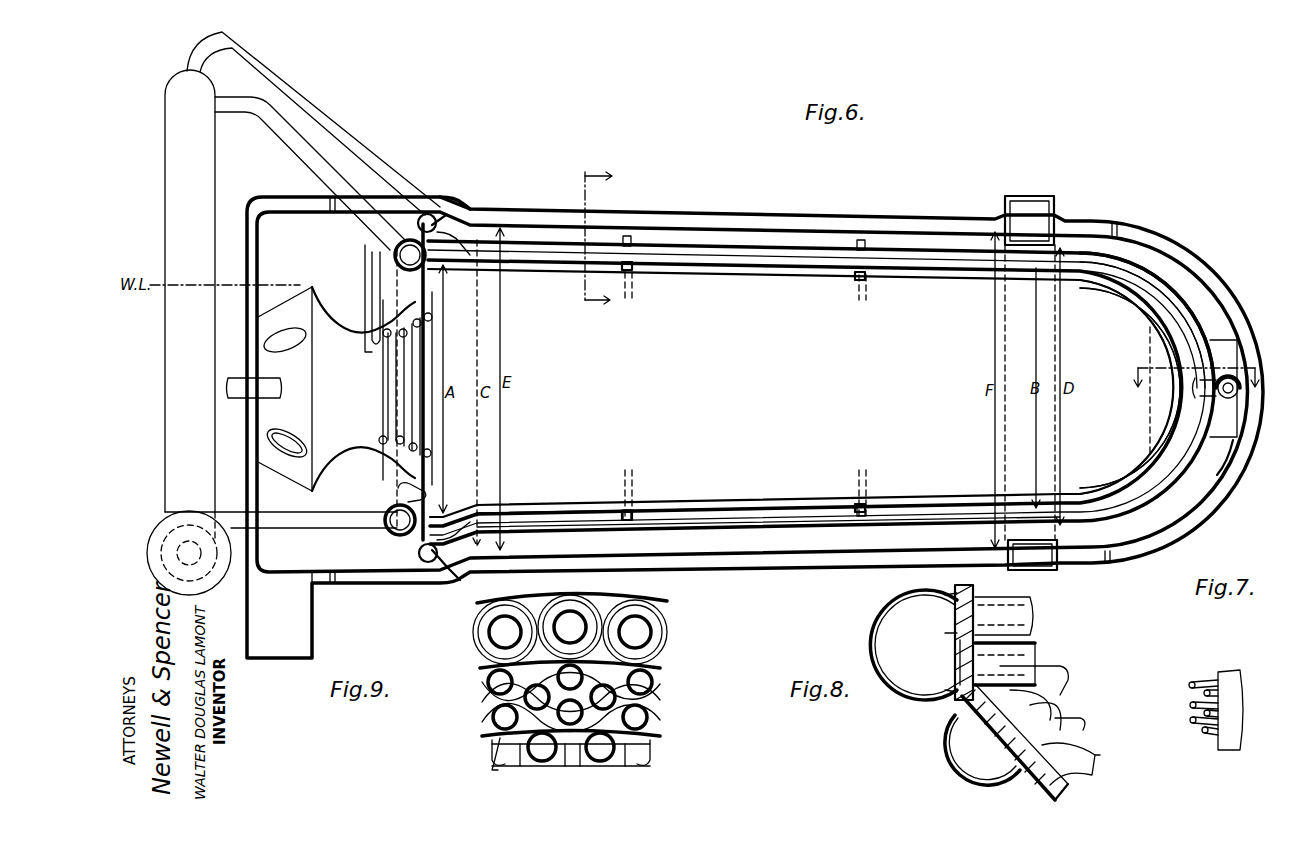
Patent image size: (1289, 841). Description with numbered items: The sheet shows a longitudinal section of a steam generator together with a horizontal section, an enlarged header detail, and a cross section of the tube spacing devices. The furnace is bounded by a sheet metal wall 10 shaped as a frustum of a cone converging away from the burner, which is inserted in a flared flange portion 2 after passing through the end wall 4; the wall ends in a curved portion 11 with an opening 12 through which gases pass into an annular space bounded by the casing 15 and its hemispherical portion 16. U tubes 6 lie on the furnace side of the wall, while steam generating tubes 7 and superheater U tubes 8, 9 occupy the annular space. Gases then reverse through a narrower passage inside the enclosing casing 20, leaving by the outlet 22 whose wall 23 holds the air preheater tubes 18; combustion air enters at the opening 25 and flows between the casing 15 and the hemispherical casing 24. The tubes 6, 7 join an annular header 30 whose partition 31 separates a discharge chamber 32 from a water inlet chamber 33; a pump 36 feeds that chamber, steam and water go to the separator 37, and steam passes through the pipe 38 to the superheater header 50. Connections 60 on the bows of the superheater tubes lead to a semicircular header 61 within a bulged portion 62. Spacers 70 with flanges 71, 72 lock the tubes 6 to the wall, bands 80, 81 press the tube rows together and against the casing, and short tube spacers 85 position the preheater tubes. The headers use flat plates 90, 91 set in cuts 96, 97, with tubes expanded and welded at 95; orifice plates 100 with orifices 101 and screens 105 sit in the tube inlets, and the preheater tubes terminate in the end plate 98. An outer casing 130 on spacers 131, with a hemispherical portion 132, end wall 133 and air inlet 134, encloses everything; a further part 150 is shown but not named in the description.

In FIG. 6, the flared flange portion 2 is at (345, 330).
In FIG. 6, the end wall 4 is at (269, 393).
In FIG. 6, the U tubes 6 is at (700, 250).
In FIG. 9, the U tubes 6 is at (540, 762).
In FIG. 8, the U tubes 6 is at (1020, 598).
In FIG. 6, the steam generating tubes 7 is at (720, 250).
In FIG. 9, the steam generating tubes 7 is at (650, 715).
In FIG. 8, the steam generating tubes 7 is at (1035, 645).
In FIG. 6, the U tubes 8 is at (450, 505).
In FIG. 9, the U tubes 8 is at (537, 685).
In FIG. 8, the U tubes 8 is at (1055, 670).
In FIG. 7, the U tubes 8 is at (1190, 718).
In FIG. 6, the U tubes 9 is at (555, 248).
In FIG. 9, the U tubes 9 is at (660, 688).
In FIG. 8, the U tubes 9 is at (1083, 722).
In FIG. 7, the U tubes 9 is at (1200, 680).
In FIG. 6, the sheet metal wall 10 is at (528, 240).
In FIG. 9, the sheet metal wall 10 is at (650, 737).
In FIG. 6, the curved portion 11 is at (1110, 300).
In FIG. 6, the opening 12 is at (1185, 340).
In FIG. 6, the casing 15 is at (670, 250).
In FIG. 9, the casing 15 is at (658, 668).
In FIG. 6, the hemispherical portion 16 is at (1150, 262).
In FIG. 6, the air preheater tubes 18 is at (740, 235).
In FIG. 9, the air preheater tubes 18 is at (575, 620).
In FIG. 8, the air preheater tubes 18 is at (1095, 755).
In FIG. 6, the enclosing casing 20 is at (895, 240).
In FIG. 9, the enclosing casing 20 is at (600, 600).
In FIG. 6, the outlet 22 is at (1025, 205).
In FIG. 6, the wall 23 is at (1065, 232).
In FIG. 6, the casing 24 is at (1190, 293).
In FIG. 6, the opening 25 is at (1229, 457).
In FIG. 6, the annular header 30 is at (383, 438).
In FIG. 8, the annular header 30 is at (862, 625).
In FIG. 6, the partition 31 is at (388, 388).
In FIG. 6, the chamber 32 is at (372, 280).
In FIG. 6, the chamber 33 is at (398, 490).
In FIG. 6, the pump 36 is at (202, 528).
In FIG. 6, the steam and water separator 37 is at (165, 205).
In FIG. 6, the pipe 38 is at (298, 98).
In FIG. 6, the superheater header 50 is at (427, 212).
In FIG. 6, the connections 60 is at (1208, 400).
In FIG. 7, the connections 60 is at (1228, 728).
In FIG. 6, the header 61 is at (1237, 355).
In FIG. 7, the header 61 is at (1242, 690).
In FIG. 6, the bulged portion 62 is at (1225, 375).
In FIG. 6, the spacers 70 is at (635, 280).
In FIG. 9, the spacers 70 is at (518, 768).
In FIG. 9, the flanged portion 71 is at (490, 752).
In FIG. 9, the flanged portion 72 is at (572, 768).
In FIG. 6, the band 80 is at (622, 268).
In FIG. 9, the band 80 is at (571, 739).
In FIG. 6, the band 81 is at (855, 278).
In FIG. 6, the spacers 85 is at (628, 238).
In FIG. 9, the spacers 85 is at (478, 645).
In FIG. 6, the flat plate 90 is at (398, 530).
In FIG. 8, the flat plate 90 is at (955, 605).
In FIG. 6, the flat plate 91 is at (462, 226).
In FIG. 8, the flat plate 91 is at (955, 745).
In FIG. 8, the weld 95 is at (929, 641).
In FIG. 6, the cuts 96 is at (965, 590).
In FIG. 8, the cuts 96 is at (955, 700).
In FIG. 8, the cuts 97 is at (960, 722).
In FIG. 6, the end plate 98 is at (445, 215).
In FIG. 8, the end plate 98 is at (1075, 792).
In FIG. 8, the orifice plates 100 is at (1003, 640).
In FIG. 8, the orifices 101 is at (1003, 640).
In FIG. 8, the screens 105 is at (958, 665).
In FIG. 6, the outer casing 130 is at (940, 216).
In FIG. 6, the spacers 131 is at (330, 195).
In FIG. 6, the hemispherical portion 132 is at (1155, 548).
In FIG. 6, the end wall 133 is at (248, 242).
In FIG. 6, the air inlet 134 is at (290, 660).
In FIG. 8, the header 150 is at (980, 775).